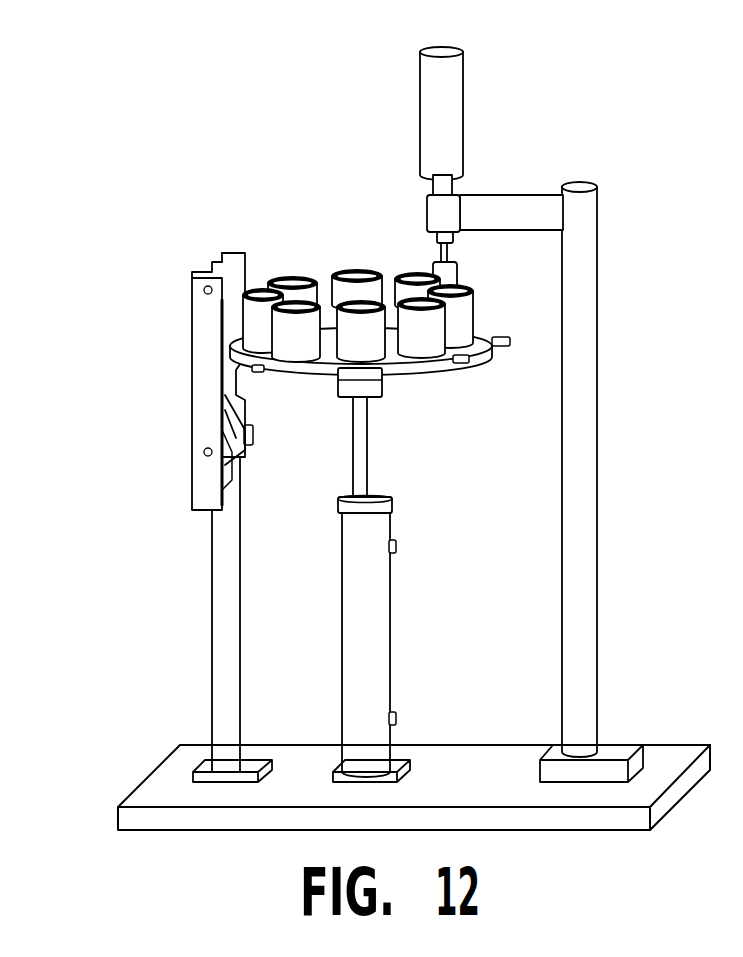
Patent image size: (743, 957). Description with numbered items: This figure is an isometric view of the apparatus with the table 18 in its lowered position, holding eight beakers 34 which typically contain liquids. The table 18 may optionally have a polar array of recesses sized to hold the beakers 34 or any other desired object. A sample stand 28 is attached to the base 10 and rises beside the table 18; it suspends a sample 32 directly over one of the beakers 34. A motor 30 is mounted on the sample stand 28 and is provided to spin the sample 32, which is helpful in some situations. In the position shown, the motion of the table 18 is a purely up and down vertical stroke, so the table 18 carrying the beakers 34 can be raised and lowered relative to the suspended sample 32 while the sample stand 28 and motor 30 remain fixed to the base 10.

The base 10 is at (150, 770).
The table 18 is at (428, 372).
The sample stand 28 is at (602, 455).
The motor 30 is at (465, 115).
The sample 32 is at (432, 265).
The beakers 34 is at (335, 268).